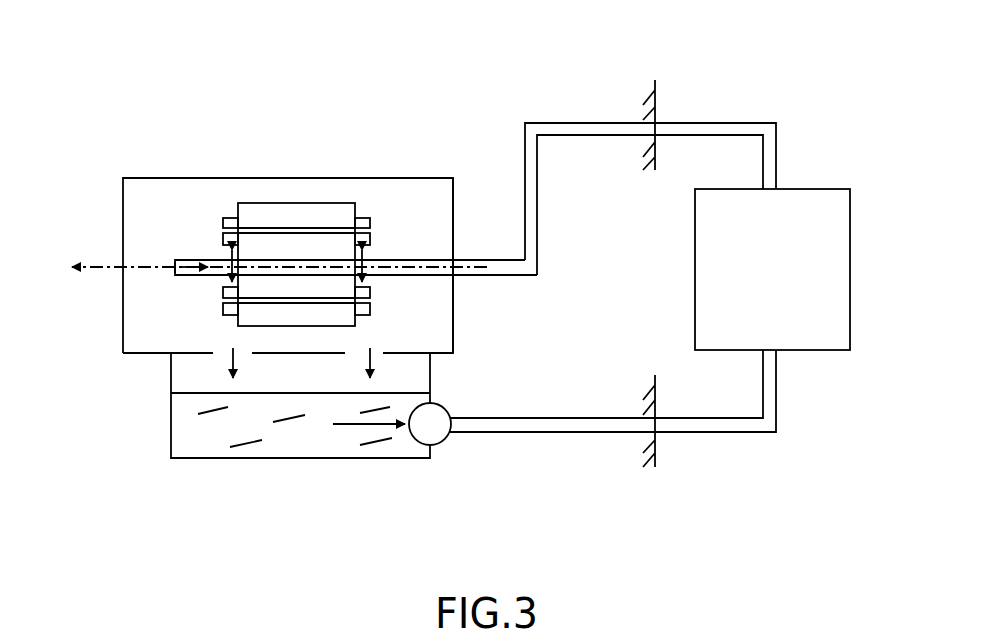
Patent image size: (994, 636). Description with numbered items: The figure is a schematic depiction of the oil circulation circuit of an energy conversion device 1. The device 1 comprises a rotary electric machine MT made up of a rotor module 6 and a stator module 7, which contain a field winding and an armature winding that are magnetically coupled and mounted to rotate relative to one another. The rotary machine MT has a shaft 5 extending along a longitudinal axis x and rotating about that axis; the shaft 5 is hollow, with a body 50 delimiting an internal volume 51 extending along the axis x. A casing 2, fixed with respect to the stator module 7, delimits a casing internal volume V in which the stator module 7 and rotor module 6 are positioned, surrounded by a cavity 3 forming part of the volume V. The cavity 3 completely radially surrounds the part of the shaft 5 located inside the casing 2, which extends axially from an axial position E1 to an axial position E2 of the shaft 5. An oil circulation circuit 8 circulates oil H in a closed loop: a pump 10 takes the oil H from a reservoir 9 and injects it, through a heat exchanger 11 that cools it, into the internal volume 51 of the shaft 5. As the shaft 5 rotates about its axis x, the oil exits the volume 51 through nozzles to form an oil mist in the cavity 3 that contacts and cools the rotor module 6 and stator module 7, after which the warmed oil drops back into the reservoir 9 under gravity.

The energy conversion device 1 is at (91, 105).
The casing 2 is at (153, 177).
The cavity 3 is at (420, 207).
The shaft 5 is at (171, 256).
The rotor module 6 is at (328, 241).
The stator module 7 is at (292, 216).
The oil circulation circuit 8 is at (744, 78).
The oil reservoir 9 is at (171, 428).
The pump 10 is at (440, 440).
The heat exchanger 11 is at (850, 275).
The body 50 is at (197, 260).
The internal volume 51 is at (173, 274).
The rotary electric machine MT is at (253, 143).
The casing internal volume V is at (373, 206).
The oil H is at (287, 442).
The axial position E1 is at (450, 267).
The axial position E2 is at (172, 272).
The longitudinal axis x is at (269, 267).